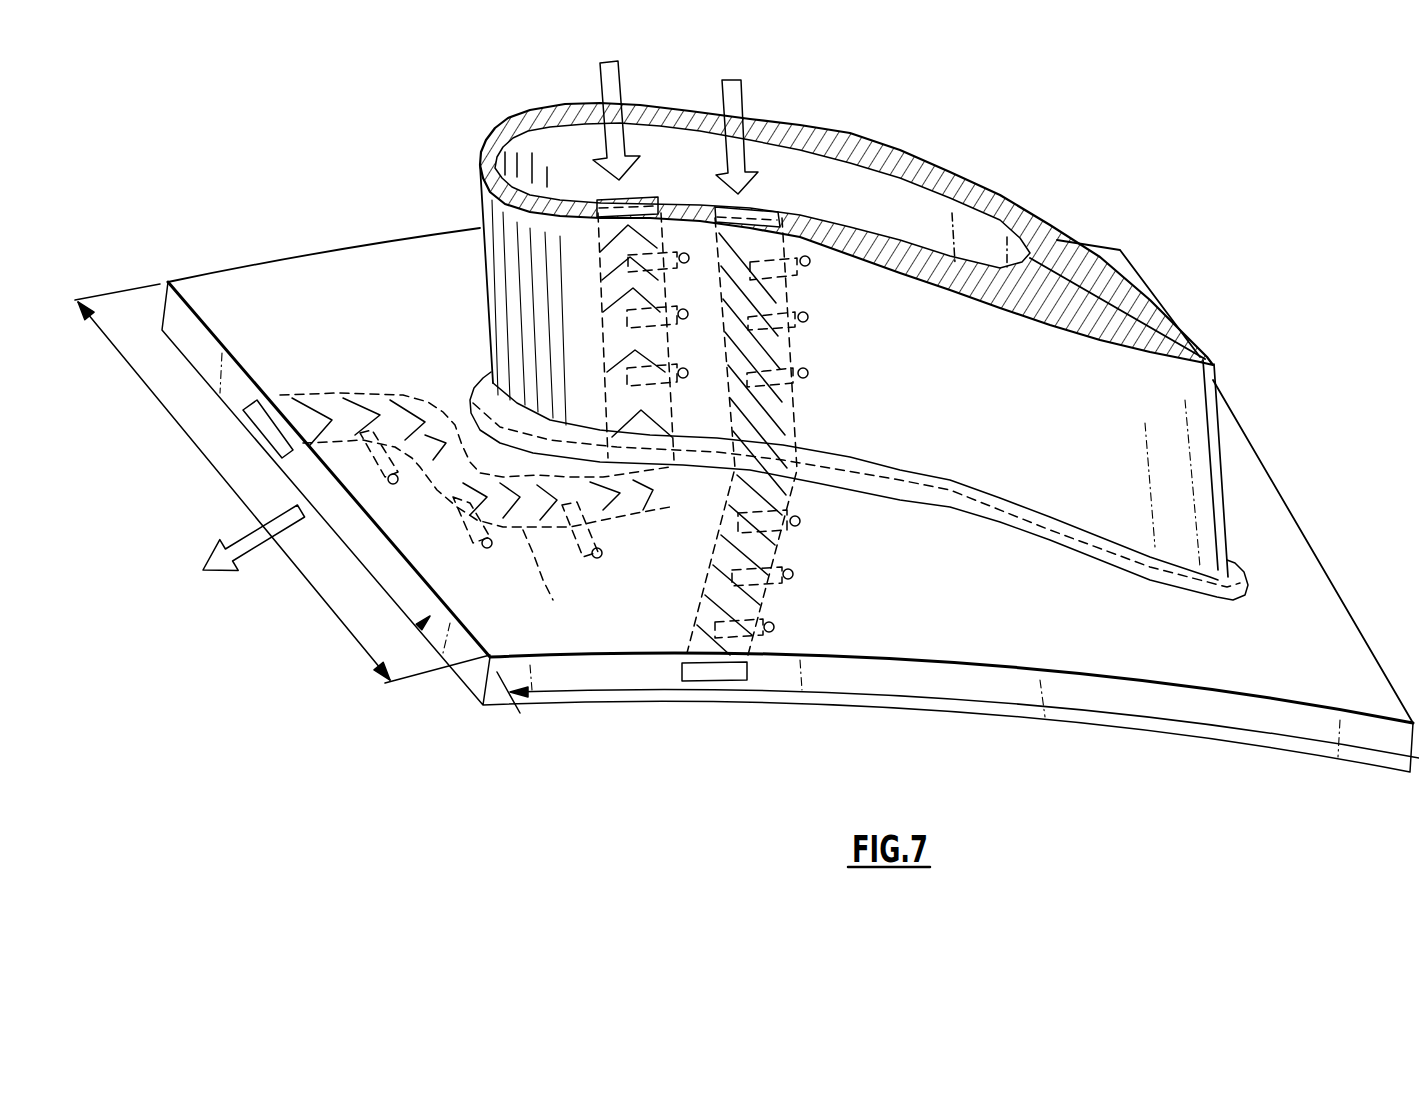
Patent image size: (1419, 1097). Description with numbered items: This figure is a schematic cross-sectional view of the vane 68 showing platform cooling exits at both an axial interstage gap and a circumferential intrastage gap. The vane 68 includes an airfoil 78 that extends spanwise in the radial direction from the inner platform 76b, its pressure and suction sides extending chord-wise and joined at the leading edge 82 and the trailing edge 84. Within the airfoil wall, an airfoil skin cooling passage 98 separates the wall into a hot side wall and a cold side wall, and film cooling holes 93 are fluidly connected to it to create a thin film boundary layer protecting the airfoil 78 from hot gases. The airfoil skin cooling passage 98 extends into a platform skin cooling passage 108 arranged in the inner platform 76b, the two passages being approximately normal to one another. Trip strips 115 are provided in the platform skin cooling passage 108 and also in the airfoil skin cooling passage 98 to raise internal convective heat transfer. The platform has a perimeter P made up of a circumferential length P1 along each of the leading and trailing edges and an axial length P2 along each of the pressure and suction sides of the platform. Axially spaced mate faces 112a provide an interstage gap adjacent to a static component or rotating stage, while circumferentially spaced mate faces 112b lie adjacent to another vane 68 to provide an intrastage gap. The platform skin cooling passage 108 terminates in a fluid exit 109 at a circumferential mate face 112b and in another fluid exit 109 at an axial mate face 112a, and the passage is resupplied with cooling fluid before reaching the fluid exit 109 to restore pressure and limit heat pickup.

The vane 68 is at (1152, 199).
The inner platform 76b is at (1137, 292).
The airfoil 78 is at (1176, 441).
The leading edge 82 is at (480, 213).
The trailing edge 84 is at (1220, 486).
The film cooling holes 93 is at (809, 318).
The airfoil skin cooling passage 98 is at (615, 302).
The platform skin cooling passage 108 is at (715, 547).
The fluid exit 109 is at (267, 425).
The axially spaced mate faces 112a is at (197, 343).
The circumferentially spaced mate faces 112b is at (498, 673).
The trip strips 115 is at (797, 412).
The perimeter P is at (427, 619).
The circumferential length P1 is at (328, 607).
The axial length P2 is at (972, 703).